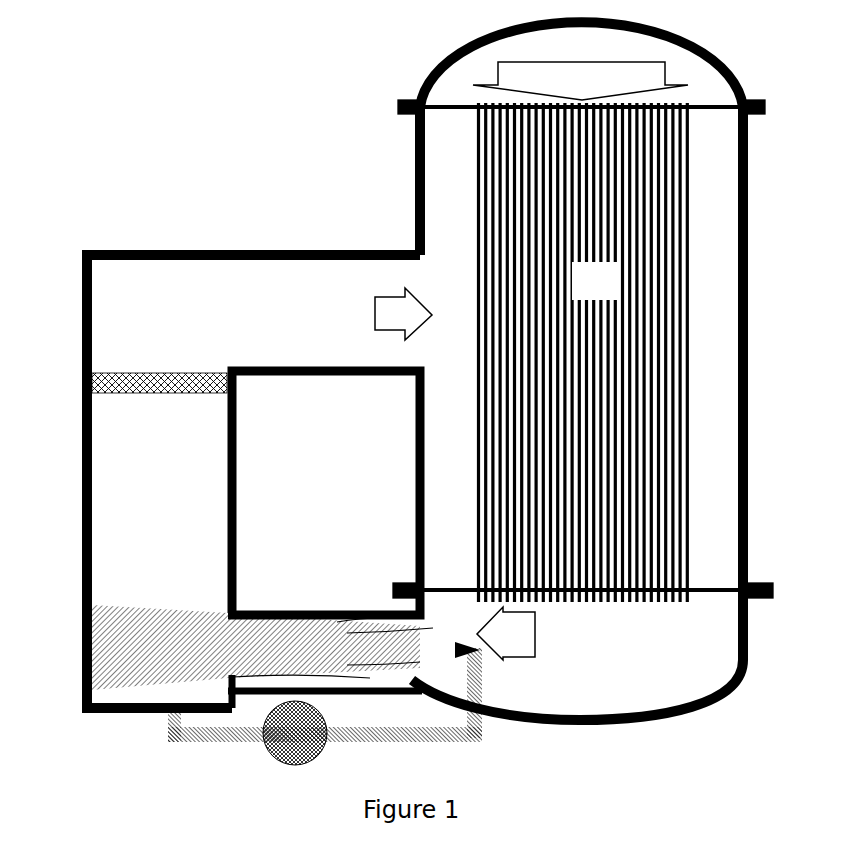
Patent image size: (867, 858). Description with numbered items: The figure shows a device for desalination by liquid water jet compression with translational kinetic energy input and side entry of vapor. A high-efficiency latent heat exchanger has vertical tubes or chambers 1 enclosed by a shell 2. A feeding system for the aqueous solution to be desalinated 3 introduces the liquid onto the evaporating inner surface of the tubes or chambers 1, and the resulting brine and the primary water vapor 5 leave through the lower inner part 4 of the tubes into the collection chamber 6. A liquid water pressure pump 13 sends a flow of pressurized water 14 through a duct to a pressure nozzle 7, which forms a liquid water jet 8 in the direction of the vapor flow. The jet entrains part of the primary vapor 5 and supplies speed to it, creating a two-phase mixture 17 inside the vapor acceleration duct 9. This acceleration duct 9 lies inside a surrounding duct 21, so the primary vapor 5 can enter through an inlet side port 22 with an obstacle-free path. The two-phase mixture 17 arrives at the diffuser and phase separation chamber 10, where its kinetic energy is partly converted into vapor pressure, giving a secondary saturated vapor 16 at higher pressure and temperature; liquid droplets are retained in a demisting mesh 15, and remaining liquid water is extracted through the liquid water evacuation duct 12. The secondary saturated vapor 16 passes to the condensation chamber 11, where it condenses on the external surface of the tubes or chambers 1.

The tubes or chambers 1 is at (583, 352).
The shell 2 is at (597, 371).
The feeding system for the aqueous solution to be desalinated 3 is at (580, 81).
The lower inner part of the tubes or chambers 4 is at (583, 606).
The primary water vapor 5 is at (506, 633).
The collection chamber 6 is at (646, 660).
The pressure nozzle 7 is at (458, 665).
The liquid water jet 8 is at (447, 650).
The vapor acceleration duct 9 is at (324, 493).
The diffuser and phase separation chamber 10 is at (253, 481).
The condensation chamber 11 is at (581, 194).
The liquid water evacuation duct 12 is at (151, 725).
The liquid water pressure pump 13 is at (295, 733).
The flow of pressurized water 14 is at (325, 697).
The demisting mesh 15 is at (132, 382).
The secondary saturated vapor 16 is at (403, 314).
The two-phase mixture 17 is at (262, 647).
The duct surrounding the vapor acceleration duct 21 is at (325, 688).
The inlet side port 22 is at (372, 620).